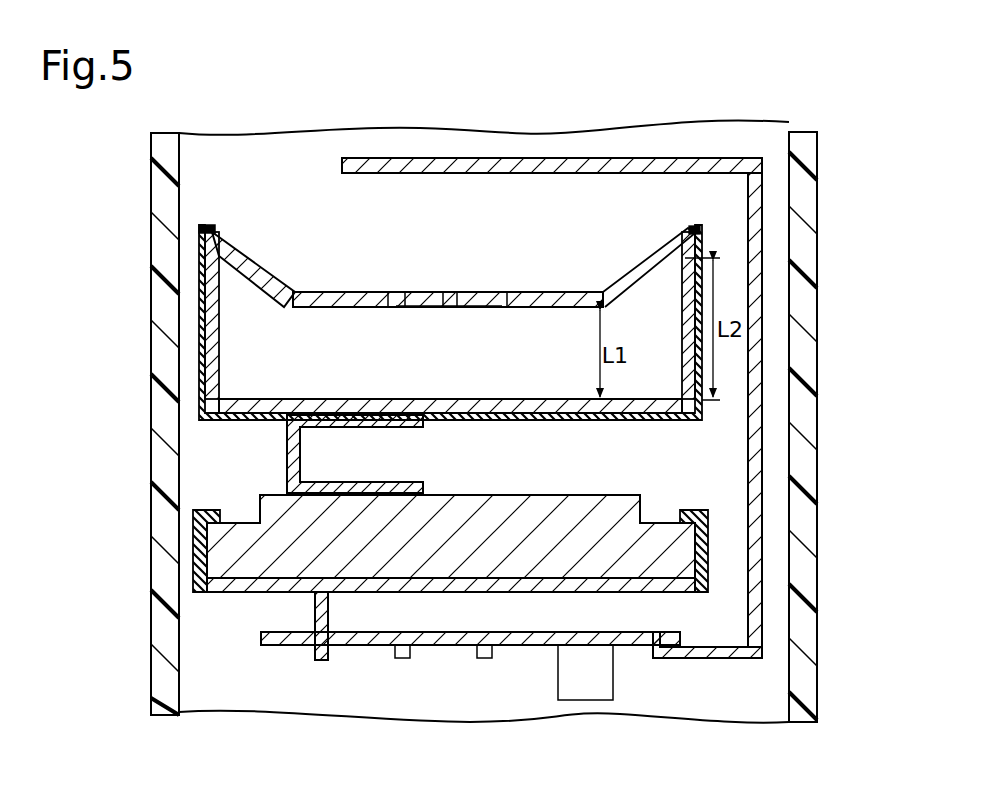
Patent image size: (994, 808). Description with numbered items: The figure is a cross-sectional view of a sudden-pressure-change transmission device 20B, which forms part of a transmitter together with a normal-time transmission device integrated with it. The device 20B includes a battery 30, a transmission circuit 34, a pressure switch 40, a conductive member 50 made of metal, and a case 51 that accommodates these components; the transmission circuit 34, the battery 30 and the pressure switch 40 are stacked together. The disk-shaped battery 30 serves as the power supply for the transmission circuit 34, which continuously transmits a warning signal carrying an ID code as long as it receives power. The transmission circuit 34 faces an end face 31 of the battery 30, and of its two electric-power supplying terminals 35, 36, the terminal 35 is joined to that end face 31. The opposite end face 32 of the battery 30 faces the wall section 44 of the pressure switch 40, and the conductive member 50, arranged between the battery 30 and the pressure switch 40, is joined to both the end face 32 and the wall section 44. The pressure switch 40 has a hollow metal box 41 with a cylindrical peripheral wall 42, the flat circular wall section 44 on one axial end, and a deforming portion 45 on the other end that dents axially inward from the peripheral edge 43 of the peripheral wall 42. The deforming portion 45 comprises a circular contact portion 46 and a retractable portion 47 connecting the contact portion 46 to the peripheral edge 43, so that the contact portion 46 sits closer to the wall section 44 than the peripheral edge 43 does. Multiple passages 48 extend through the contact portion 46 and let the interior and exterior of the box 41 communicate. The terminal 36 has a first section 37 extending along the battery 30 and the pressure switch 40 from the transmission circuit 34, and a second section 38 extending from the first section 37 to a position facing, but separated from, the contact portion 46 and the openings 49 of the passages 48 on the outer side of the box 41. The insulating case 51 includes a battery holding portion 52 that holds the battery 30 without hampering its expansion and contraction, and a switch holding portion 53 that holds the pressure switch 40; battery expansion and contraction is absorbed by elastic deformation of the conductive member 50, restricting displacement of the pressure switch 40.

The sudden-pressure-change transmission device 20B is at (130, 203).
The battery 30 is at (407, 538).
The end face 31 is at (582, 580).
The end face 32 is at (582, 495).
The transmission circuit 34 is at (261, 637).
The terminal 35 is at (329, 600).
The terminal 36 is at (603, 398).
The first section 37 is at (758, 352).
The second section 38 is at (562, 173).
The pressure switch 40 is at (405, 339).
The box 41 is at (203, 354).
The peripheral wall 42 is at (213, 391).
The peripheral edge 43 is at (678, 256).
The wall section 44 is at (478, 413).
The deforming portion 45 is at (407, 243).
The contact portion 46 is at (448, 268).
The retractable portion 47 is at (263, 267).
The passages 48 is at (395, 302).
The openings 49 is at (395, 298).
The conductive member 50 is at (287, 450).
The case 51 is at (151, 456).
The battery holding portion 52 is at (194, 521).
The switch holding portion 53 is at (205, 254).